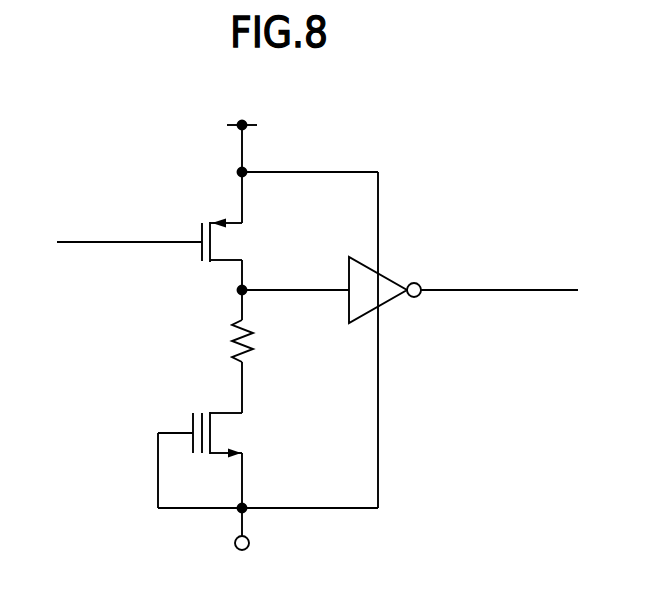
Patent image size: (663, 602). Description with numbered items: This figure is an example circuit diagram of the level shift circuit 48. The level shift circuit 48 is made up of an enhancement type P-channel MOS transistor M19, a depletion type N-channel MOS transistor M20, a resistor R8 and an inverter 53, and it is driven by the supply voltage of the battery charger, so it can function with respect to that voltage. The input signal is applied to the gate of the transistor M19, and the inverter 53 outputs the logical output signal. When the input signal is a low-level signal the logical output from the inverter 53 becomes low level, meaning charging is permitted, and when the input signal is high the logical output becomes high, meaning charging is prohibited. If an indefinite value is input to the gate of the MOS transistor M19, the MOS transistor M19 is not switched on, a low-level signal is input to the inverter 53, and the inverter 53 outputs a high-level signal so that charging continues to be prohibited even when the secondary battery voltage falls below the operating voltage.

The level shift circuit 48 is at (30, 97).
The inverter 53 is at (386, 270).
The enhancement type P-channel MOS transistor M19 is at (208, 226).
The depletion type N-channel MOS transistor M20 is at (208, 421).
The resistor R8 is at (221, 341).